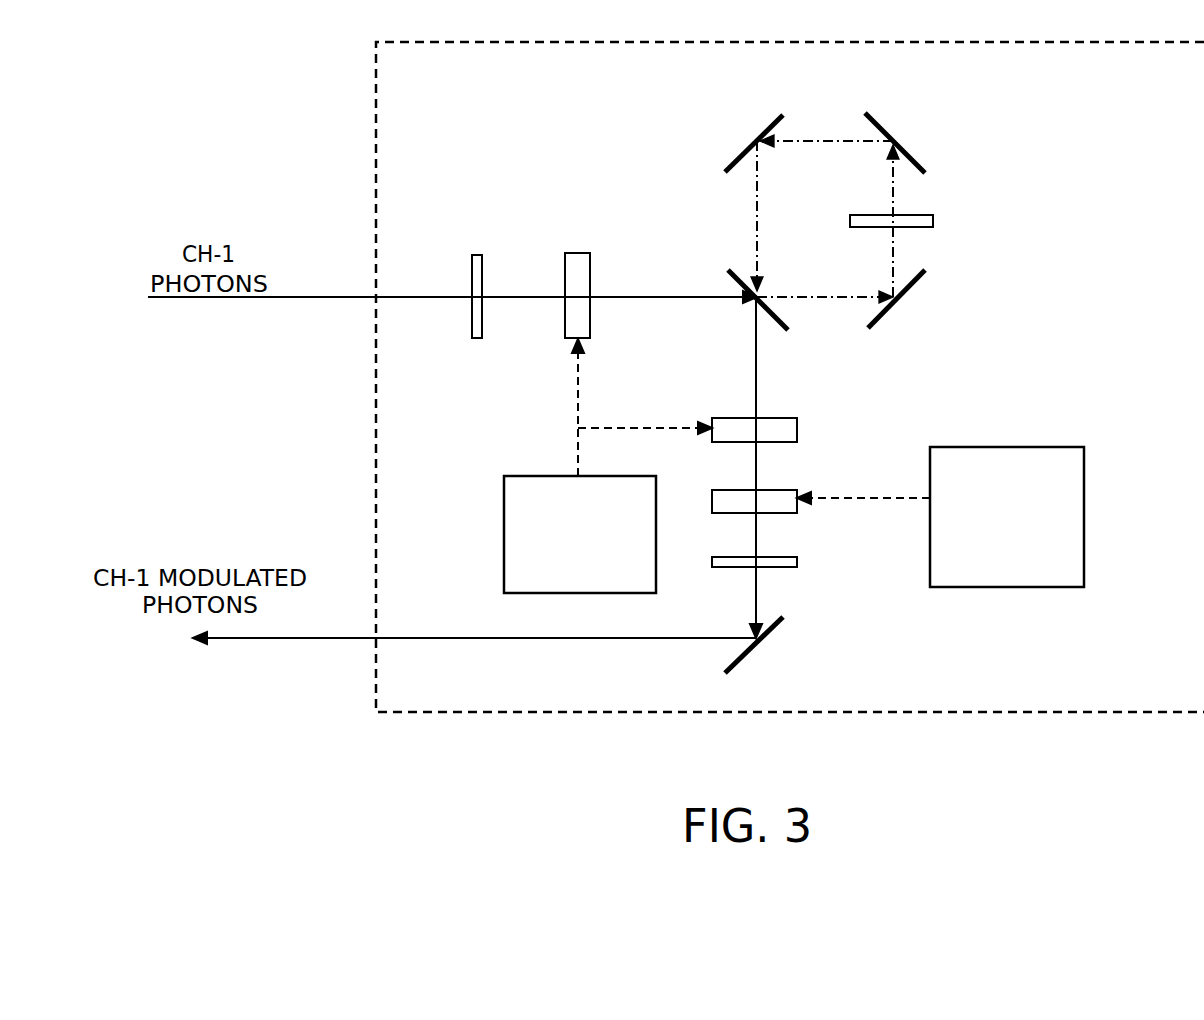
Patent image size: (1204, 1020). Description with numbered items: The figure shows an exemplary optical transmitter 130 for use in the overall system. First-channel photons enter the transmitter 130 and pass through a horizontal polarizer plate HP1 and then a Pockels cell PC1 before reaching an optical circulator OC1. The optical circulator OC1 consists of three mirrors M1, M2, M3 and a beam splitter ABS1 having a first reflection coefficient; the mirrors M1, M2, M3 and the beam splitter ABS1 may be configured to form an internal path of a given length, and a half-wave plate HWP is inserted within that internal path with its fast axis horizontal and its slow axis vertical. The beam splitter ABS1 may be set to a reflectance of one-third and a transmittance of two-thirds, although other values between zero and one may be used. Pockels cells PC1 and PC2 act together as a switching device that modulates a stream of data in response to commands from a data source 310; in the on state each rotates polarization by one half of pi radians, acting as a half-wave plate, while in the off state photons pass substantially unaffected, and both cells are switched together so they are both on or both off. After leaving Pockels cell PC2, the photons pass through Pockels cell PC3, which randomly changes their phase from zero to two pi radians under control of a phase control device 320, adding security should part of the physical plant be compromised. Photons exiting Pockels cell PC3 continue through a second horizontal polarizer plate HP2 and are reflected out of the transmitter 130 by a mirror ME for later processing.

The optical transmitter 130 is at (1173, 680).
The optical circulator OC1 is at (1004, 148).
The mirror M1 is at (919, 280).
The mirror M2 is at (880, 124).
The mirror M3 is at (766, 131).
The beam splitter ABS1 is at (782, 328).
The half-wave plate HWP is at (922, 218).
The horizontal polarizer plate HP1 is at (480, 282).
The Pockels cell PC1 is at (578, 282).
The Pockels cell PC2 is at (782, 430).
The Pockels cell PC3 is at (743, 488).
The horizontal polarizer plate HP2 is at (782, 562).
The mirror ME is at (778, 628).
The data source 310 is at (601, 582).
The phase control device 320 is at (1028, 581).